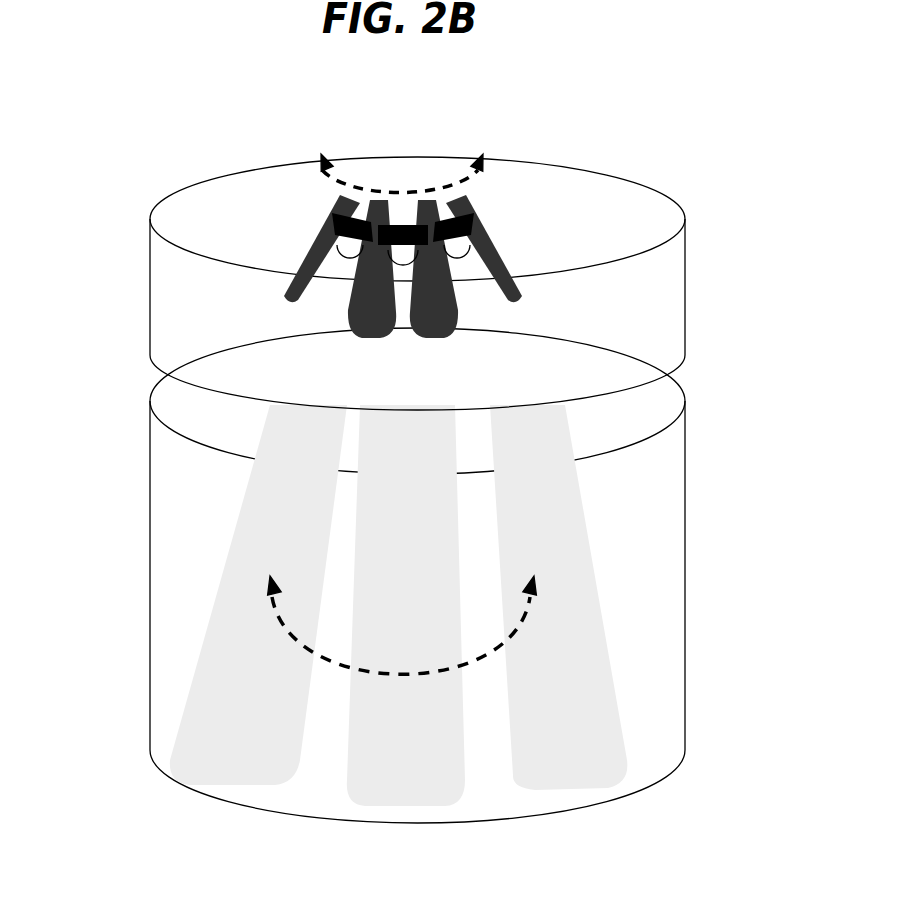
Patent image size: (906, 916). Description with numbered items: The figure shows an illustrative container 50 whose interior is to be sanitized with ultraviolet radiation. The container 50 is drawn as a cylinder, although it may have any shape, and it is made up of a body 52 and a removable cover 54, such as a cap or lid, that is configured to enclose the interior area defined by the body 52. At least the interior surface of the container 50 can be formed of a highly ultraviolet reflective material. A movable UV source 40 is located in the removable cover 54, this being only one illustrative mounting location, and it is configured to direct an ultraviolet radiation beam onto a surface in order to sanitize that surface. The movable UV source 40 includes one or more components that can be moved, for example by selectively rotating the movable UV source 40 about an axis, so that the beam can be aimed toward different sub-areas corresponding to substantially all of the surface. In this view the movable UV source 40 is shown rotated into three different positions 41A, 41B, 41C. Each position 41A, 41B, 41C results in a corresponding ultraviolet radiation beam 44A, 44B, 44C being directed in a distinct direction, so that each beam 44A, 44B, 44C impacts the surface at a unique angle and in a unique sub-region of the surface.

The container 50 is at (97, 159).
The body 52 is at (150, 511).
The removable cover 54 is at (158, 293).
The movable UV source 40 is at (382, 175).
The first position 41A is at (327, 232).
The second position 41B is at (400, 205).
The third position 41C is at (479, 232).
The ultraviolet radiation beam 44A is at (193, 704).
The ultraviolet radiation beam 44B is at (403, 793).
The ultraviolet radiation beam 44C is at (610, 712).